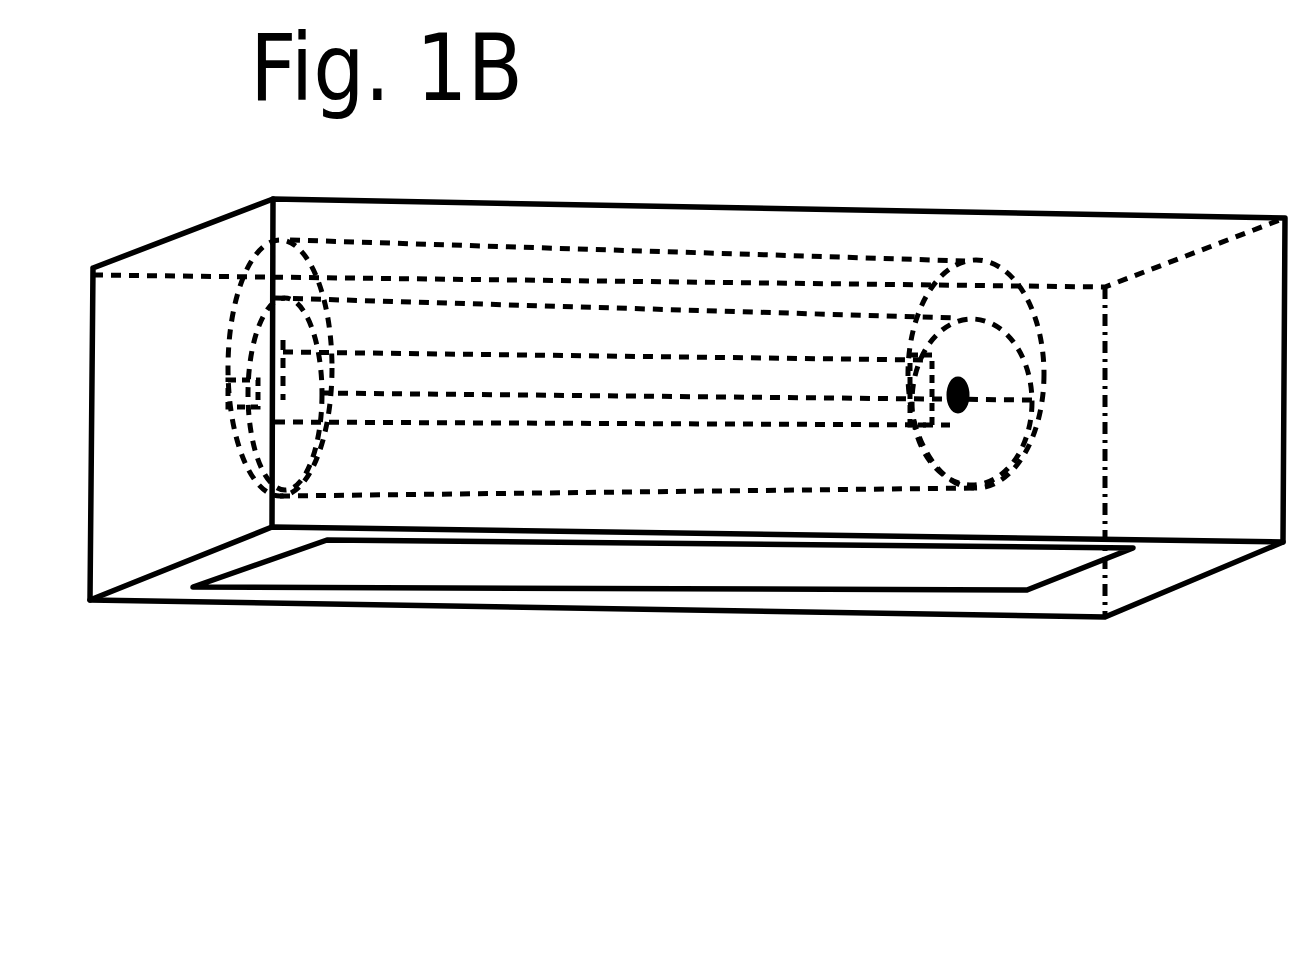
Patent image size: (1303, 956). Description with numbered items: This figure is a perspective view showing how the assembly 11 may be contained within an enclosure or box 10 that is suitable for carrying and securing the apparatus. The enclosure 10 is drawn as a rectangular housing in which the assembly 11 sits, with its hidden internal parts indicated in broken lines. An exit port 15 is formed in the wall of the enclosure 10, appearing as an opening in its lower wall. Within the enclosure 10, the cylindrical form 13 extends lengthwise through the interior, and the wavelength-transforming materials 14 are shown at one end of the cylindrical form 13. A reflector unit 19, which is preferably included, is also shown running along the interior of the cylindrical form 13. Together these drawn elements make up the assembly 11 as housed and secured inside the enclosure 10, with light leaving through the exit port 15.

The enclosure 10 is at (182, 220).
The assembly 11 is at (1050, 377).
The cylindrical form 13 is at (522, 248).
The wavelength-transforming materials 14 is at (248, 450).
The exit port 15 is at (670, 562).
The reflector unit 19 is at (718, 310).